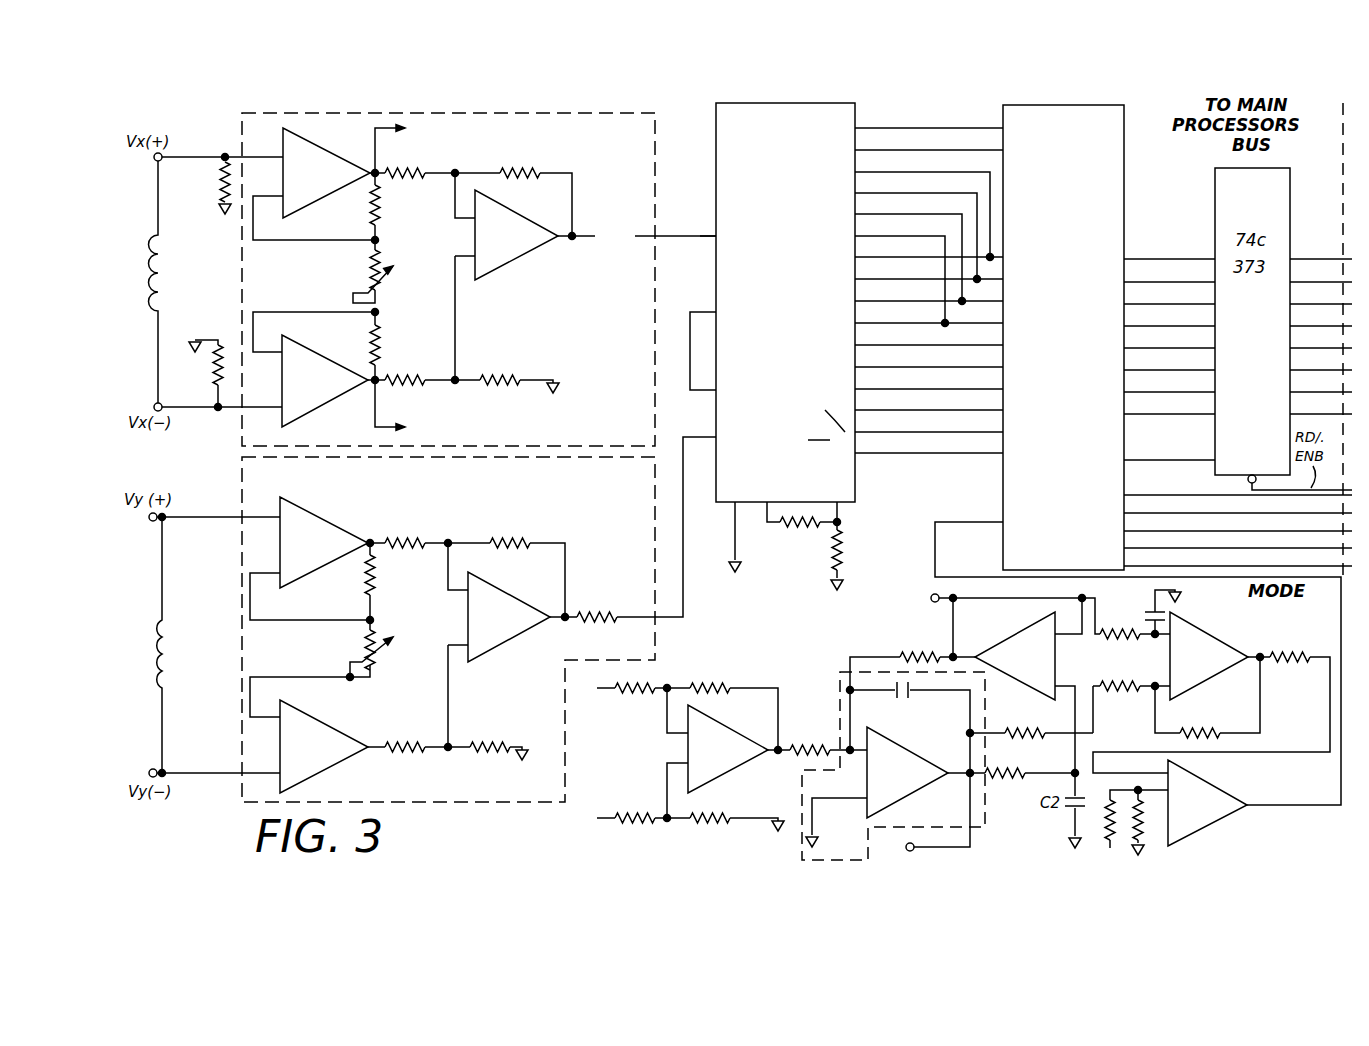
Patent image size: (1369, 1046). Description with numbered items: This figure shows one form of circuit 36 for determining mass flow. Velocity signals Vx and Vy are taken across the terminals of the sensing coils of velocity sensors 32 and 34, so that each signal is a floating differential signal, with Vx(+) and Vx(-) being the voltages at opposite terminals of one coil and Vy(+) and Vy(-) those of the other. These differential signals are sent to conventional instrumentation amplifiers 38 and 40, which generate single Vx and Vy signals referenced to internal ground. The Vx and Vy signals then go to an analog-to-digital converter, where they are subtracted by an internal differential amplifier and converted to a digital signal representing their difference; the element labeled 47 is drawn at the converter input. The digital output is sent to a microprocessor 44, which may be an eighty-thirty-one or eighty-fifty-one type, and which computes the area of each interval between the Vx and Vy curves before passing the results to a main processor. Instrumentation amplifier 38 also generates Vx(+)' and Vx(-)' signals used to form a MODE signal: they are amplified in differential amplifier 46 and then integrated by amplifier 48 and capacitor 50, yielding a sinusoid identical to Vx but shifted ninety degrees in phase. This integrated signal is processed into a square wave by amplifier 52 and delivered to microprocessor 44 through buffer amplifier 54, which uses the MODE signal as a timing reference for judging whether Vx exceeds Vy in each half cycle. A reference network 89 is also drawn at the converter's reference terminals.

The velocity sensor 32 is at (175, 300).
The velocity sensor 34 is at (171, 667).
The circuit for determining mass flow 36 is at (683, 176).
The instrumentation amplifier 38 is at (614, 153).
The instrumentation amplifier 40 is at (610, 501).
The microprocessor 44 is at (1118, 164).
The differential amplifier 46 is at (690, 748).
The analog input VIN+ of converter 47 is at (716, 192).
The integrating amplifier 48 is at (893, 788).
The capacitor 50 is at (857, 688).
The amplifier 52 is at (1222, 664).
The buffer amplifier 54 is at (1222, 812).
The reference voltage divider 89 is at (786, 546).